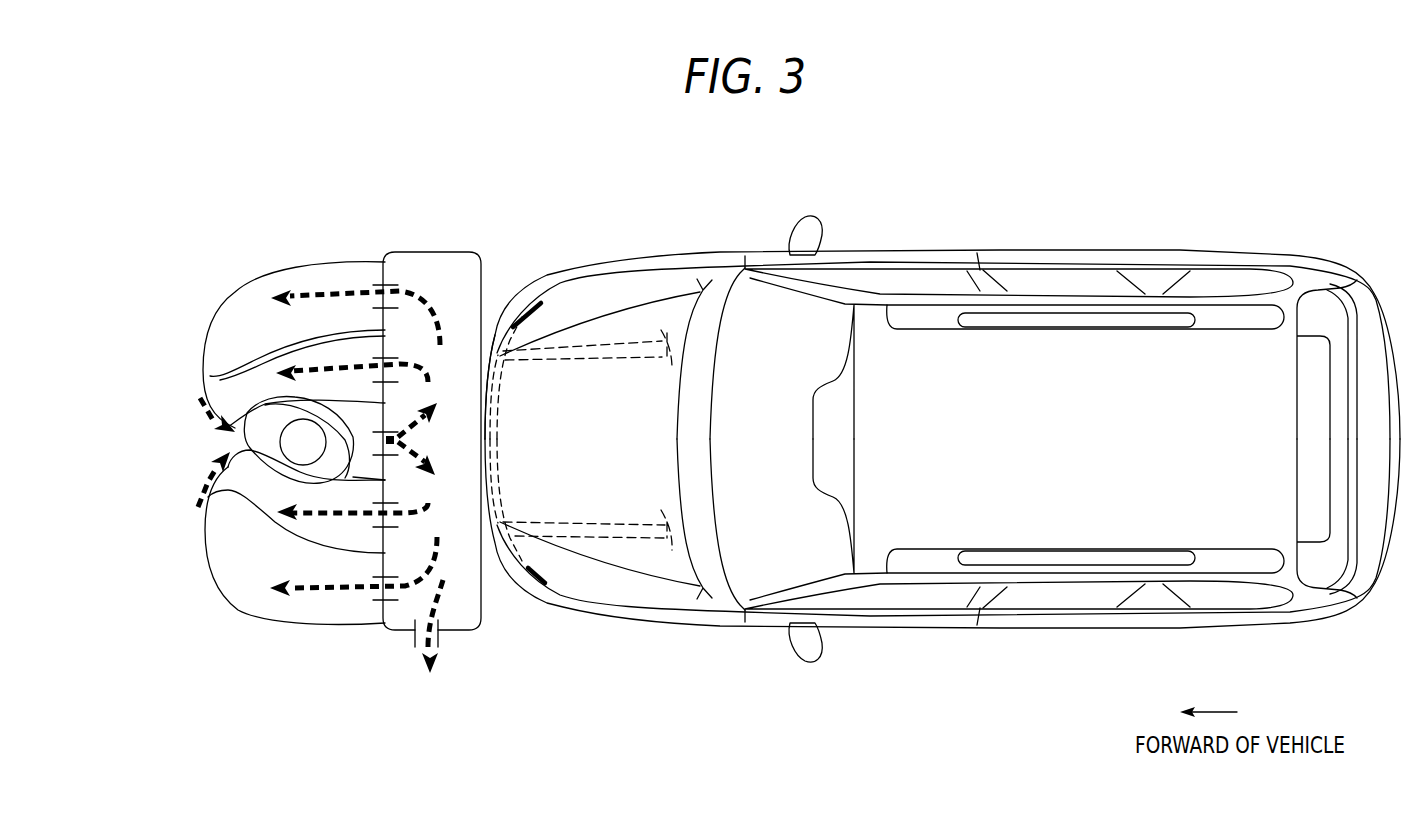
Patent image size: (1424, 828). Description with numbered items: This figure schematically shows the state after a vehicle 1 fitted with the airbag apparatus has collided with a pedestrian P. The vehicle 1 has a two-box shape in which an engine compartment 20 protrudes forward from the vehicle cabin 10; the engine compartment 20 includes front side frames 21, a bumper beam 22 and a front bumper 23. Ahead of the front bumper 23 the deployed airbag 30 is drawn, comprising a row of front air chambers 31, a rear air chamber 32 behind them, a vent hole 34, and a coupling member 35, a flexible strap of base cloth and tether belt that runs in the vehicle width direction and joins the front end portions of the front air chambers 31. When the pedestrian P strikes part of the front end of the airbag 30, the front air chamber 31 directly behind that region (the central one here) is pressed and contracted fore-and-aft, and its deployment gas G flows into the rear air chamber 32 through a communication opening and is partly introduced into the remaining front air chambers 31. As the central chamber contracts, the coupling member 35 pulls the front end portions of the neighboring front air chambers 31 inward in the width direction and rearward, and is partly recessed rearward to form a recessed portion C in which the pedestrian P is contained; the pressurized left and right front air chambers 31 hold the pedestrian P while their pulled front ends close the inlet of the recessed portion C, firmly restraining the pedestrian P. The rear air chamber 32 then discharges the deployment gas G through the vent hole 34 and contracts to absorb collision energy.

The vehicle 1 is at (1318, 223).
The vehicle cabin 10 is at (1048, 227).
The engine compartment 20 is at (618, 230).
The front side frames 21 is at (643, 343).
The bumper beam 22 is at (523, 313).
The front bumper 23 is at (500, 336).
The airbag 30 is at (215, 254).
The front air chambers 31 is at (287, 272).
The rear air chamber 32 is at (408, 253).
The vent hole 34 is at (445, 655).
The coupling member 35 is at (222, 475).
The pedestrian P is at (233, 432).
The recessed portion C is at (226, 449).
The deployment gas G is at (364, 443).